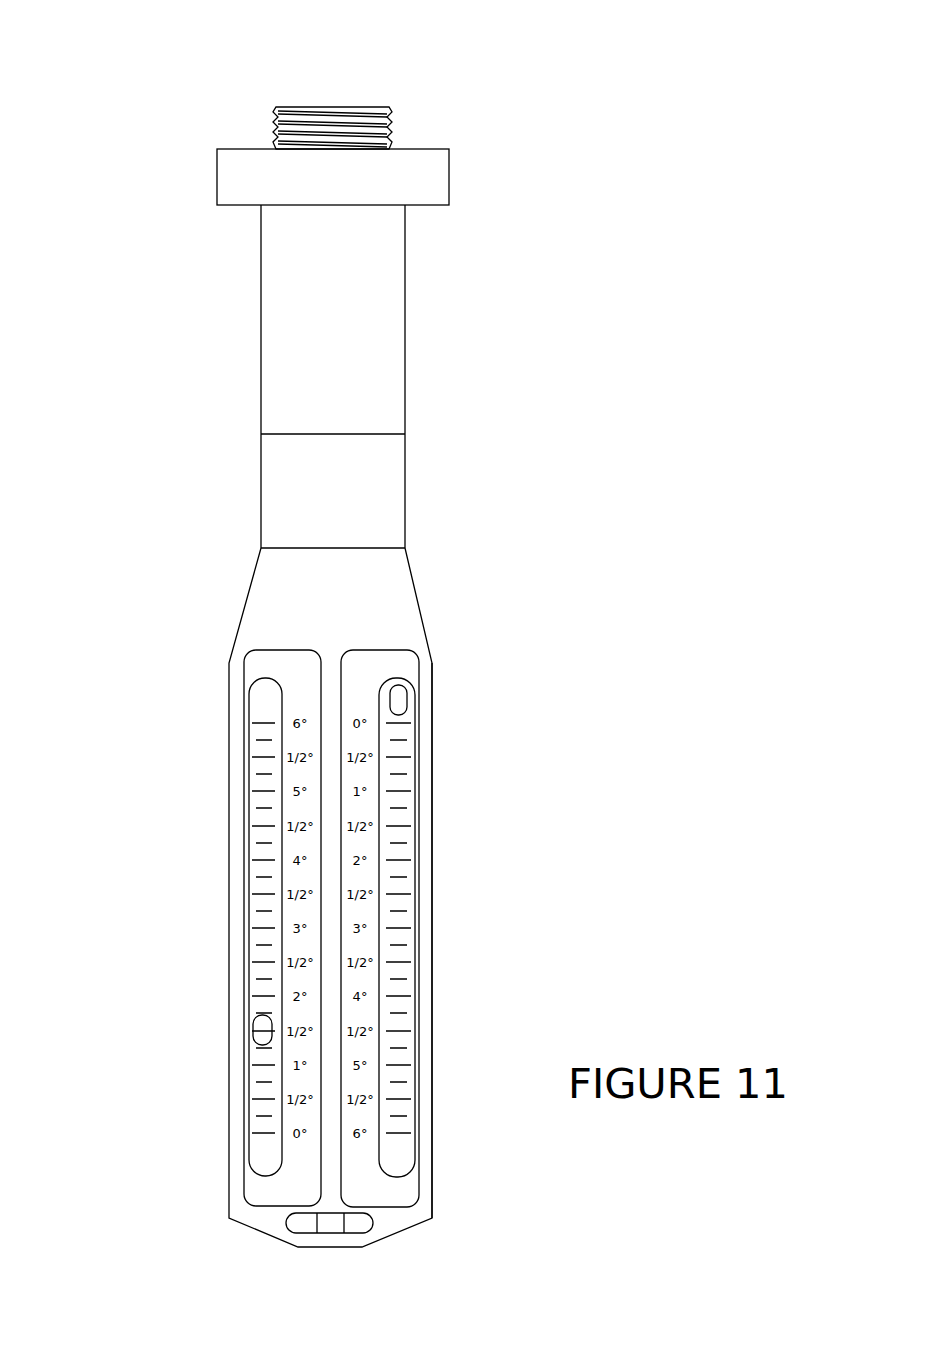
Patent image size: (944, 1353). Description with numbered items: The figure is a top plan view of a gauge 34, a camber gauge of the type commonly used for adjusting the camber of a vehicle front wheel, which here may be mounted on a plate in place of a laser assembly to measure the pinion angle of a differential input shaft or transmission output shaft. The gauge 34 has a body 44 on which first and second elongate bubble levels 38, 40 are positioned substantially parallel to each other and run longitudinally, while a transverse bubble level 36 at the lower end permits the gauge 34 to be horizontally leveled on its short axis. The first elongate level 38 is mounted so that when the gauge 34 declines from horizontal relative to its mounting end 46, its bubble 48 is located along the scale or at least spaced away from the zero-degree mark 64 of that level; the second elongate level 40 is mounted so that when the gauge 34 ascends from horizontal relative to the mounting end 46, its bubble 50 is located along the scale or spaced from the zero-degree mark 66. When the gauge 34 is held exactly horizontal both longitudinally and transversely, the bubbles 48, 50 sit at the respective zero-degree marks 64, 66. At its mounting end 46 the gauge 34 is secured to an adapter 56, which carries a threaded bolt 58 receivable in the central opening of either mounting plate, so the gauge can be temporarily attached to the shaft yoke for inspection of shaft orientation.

The threaded bolt 58 is at (335, 107).
The adapter 56 is at (449, 163).
The mounting end 46 is at (298, 278).
The gauge 34 is at (215, 700).
The body 44 is at (432, 967).
The first elongate bubble level 38 is at (243, 870).
The second elongate bubble level 40 is at (418, 917).
The 0° mark 64 is at (247, 1133).
The 0° mark 66 is at (406, 720).
The bubble 48 is at (250, 1023).
The bubble 50 is at (405, 697).
The transverse bubble level 36 is at (368, 1226).